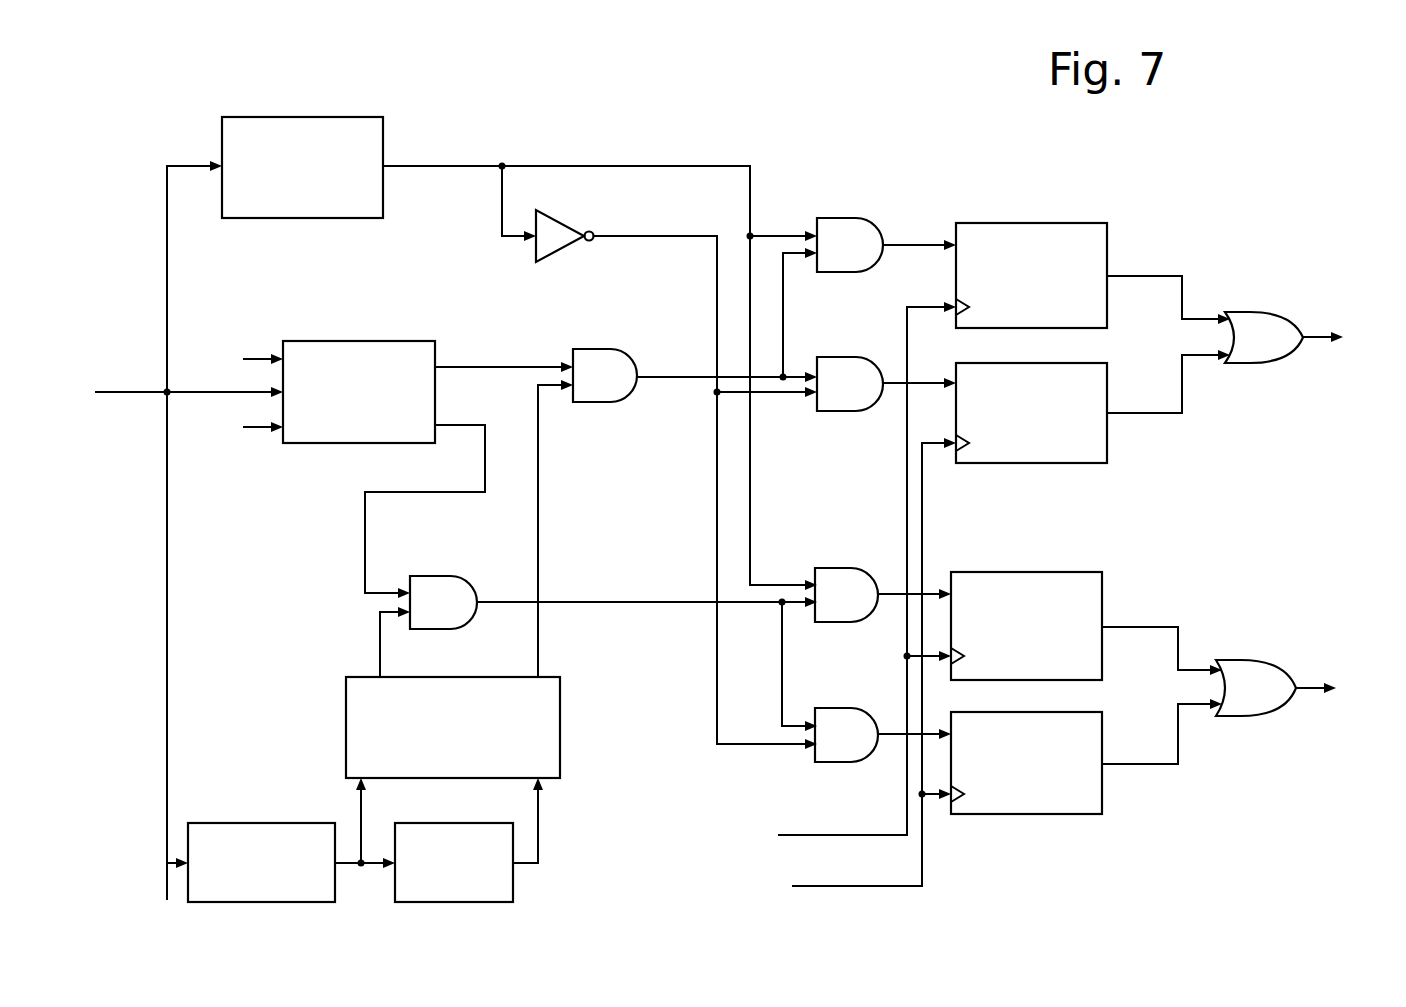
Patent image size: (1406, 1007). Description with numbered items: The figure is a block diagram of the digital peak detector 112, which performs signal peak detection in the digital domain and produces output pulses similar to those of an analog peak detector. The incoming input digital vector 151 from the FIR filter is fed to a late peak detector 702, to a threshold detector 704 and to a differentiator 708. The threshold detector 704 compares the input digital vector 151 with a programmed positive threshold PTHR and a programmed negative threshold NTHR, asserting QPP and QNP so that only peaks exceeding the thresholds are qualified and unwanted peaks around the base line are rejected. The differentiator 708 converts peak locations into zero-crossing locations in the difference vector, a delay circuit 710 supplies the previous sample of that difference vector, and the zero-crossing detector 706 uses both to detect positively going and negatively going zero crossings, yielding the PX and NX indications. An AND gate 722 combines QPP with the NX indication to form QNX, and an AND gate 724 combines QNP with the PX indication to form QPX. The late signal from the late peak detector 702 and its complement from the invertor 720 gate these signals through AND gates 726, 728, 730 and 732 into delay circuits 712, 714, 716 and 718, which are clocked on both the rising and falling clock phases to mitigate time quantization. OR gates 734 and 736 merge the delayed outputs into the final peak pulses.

The digital peak detector 112 is at (137, 129).
The input digital vector 151 is at (143, 392).
The late peak detector 702 is at (305, 117).
The threshold detector 704 is at (355, 341).
The zero-crossing detector 706 is at (560, 740).
The differentiator 708 is at (237, 823).
The delay circuit 710 is at (448, 823).
The delay circuit 712 is at (1028, 223).
The delay circuit 714 is at (1017, 463).
The delay circuit 716 is at (1020, 572).
The delay circuit 718 is at (1012, 814).
The invertor 720 is at (560, 222).
The AND gate 722 is at (592, 349).
The AND gate 724 is at (445, 559).
The AND gate 726 is at (852, 218).
The AND gate 728 is at (843, 357).
The AND gate 730 is at (840, 568).
The AND gate 732 is at (838, 708).
The OR gate 734 is at (1250, 312).
The OR gate 736 is at (1243, 660).